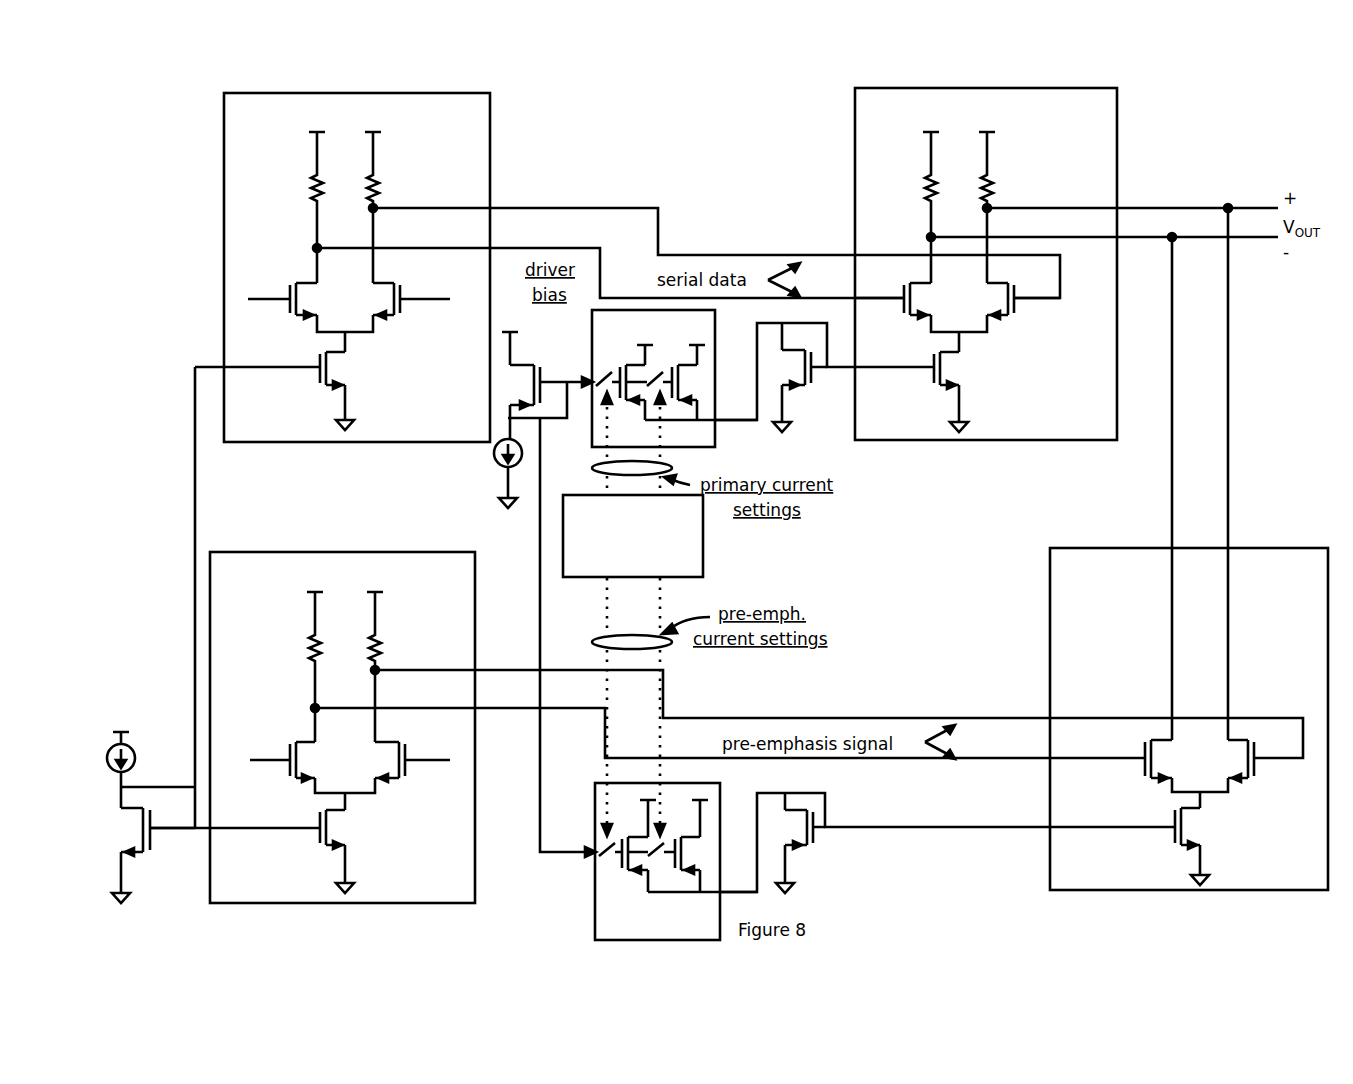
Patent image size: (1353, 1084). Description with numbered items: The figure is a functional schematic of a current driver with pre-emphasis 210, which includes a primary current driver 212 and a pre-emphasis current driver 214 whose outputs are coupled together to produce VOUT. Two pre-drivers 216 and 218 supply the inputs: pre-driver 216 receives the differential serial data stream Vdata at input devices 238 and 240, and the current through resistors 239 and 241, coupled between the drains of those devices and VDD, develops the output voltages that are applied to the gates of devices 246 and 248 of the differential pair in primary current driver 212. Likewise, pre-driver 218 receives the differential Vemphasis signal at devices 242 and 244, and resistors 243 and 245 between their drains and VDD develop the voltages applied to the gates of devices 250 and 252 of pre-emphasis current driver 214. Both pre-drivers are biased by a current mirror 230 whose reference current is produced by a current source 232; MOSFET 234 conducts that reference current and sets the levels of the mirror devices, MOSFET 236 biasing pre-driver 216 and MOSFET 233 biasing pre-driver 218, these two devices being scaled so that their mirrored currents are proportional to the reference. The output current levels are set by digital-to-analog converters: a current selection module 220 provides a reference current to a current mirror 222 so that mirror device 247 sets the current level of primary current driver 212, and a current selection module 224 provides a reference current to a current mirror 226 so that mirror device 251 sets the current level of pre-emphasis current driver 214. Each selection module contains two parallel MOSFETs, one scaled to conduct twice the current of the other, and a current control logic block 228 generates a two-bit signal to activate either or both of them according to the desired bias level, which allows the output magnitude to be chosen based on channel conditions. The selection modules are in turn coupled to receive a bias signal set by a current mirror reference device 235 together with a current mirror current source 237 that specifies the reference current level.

The current driver with pre-emphasis 210 is at (963, 922).
The primary current driver 212 is at (986, 264).
The pre-emphasis current driver 214 is at (1189, 719).
The pre-driver 216 is at (342, 267).
The pre-driver 218 is at (312, 727).
The current selection module 220 is at (715, 440).
The current mirror 222 is at (975, 374).
The current selection module 224 is at (596, 898).
The current mirror 226 is at (1212, 832).
The current control logic block 228 is at (703, 530).
The current mirror 230 is at (367, 379).
The current source 232 is at (120, 777).
The MOSFET 233 is at (316, 824).
The MOSFET 234 is at (136, 818).
The current mirror reference device 235 is at (545, 594).
The MOSFET 236 is at (316, 364).
The current mirror current source 237 is at (494, 460).
The input device 238 is at (287, 305).
The resistor 239 is at (310, 196).
The input device 240 is at (402, 305).
The resistor 241 is at (383, 189).
The input device 242 is at (300, 766).
The resistor 243 is at (306, 653).
The input device 244 is at (401, 765).
The resistor 245 is at (383, 646).
The device 246 is at (902, 314).
The mirror device 247 is at (928, 364).
The device 248 is at (1016, 314).
The device 250 is at (1136, 764).
The mirror device 251 is at (1170, 822).
The device 252 is at (1252, 763).